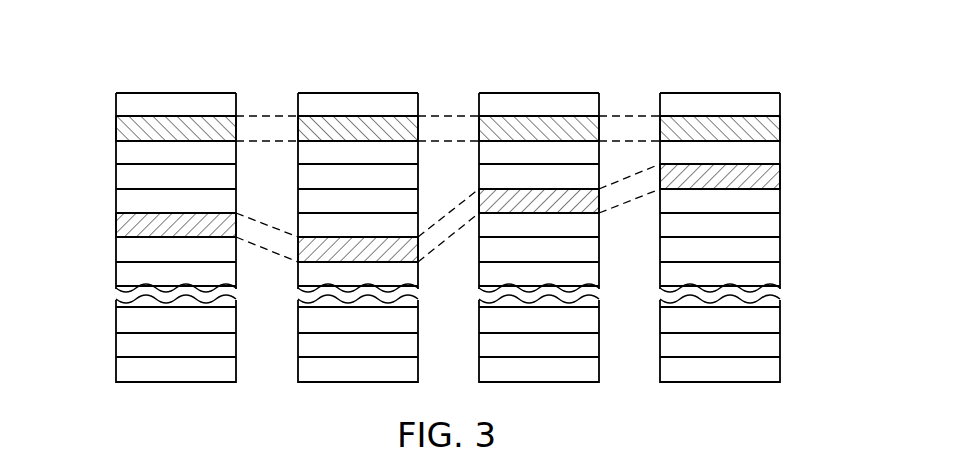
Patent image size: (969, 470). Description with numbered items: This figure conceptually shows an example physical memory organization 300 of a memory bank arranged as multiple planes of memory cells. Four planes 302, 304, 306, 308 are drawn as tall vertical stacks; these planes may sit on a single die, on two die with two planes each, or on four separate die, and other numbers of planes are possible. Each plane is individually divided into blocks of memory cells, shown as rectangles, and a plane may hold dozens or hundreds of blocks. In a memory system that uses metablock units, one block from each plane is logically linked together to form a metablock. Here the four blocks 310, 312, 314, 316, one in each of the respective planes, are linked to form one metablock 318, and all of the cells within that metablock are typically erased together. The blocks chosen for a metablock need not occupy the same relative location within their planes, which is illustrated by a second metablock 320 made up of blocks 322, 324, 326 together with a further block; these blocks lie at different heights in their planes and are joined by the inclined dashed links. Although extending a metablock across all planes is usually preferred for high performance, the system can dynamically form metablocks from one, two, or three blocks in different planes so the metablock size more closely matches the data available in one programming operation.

The first stack / device 300 is at (148, 208).
The plane 302 is at (343, 208).
The plane 304 is at (510, 208).
The plane 306 is at (754, 213).
The plane 308 is at (157, 130).
The block 310 is at (340, 128).
The block 312 is at (520, 132).
The block 314 is at (745, 128).
The block 316 is at (626, 105).
The metablock 318 is at (634, 165).
The second metablock 320 is at (152, 225).
The block 322 is at (333, 248).
The block 324 is at (527, 198).
The block 326 is at (748, 175).